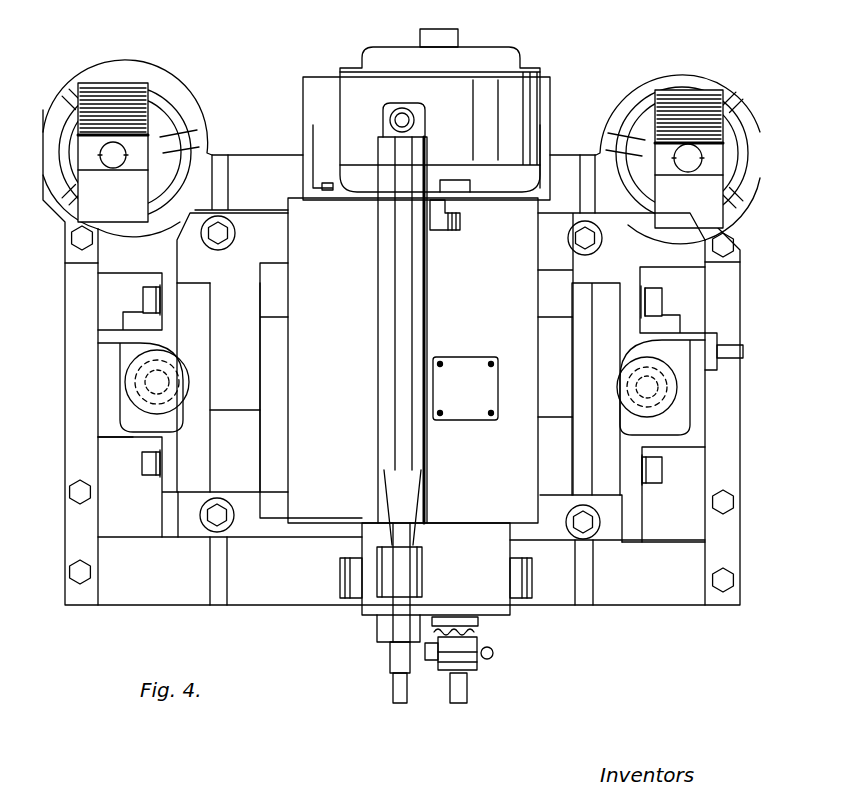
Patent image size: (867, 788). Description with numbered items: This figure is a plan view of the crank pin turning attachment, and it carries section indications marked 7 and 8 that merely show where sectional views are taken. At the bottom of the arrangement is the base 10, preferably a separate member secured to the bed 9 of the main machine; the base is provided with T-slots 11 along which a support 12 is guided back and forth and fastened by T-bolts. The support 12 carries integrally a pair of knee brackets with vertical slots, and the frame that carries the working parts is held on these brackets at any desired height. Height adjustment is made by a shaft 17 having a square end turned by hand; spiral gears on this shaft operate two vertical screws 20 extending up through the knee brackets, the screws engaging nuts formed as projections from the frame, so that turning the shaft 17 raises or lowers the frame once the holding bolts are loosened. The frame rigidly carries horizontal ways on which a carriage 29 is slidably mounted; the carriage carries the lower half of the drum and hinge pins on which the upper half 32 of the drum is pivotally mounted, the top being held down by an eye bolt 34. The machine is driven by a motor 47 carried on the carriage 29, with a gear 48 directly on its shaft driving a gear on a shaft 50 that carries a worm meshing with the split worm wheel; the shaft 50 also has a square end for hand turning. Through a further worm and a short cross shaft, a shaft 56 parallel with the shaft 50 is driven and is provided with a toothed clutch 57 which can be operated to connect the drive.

The section line 7- 7 is at (403, 103).
The section line 8- 8 is at (330, 581).
The bed 9 is at (463, 180).
The base 10 is at (282, 600).
The T-slots 11 is at (218, 573).
The support 12 is at (662, 545).
The shaft 17 is at (730, 345).
The vertical screws 20 is at (140, 410).
The carriage 29 is at (413, 360).
The upper half of the drum 32 is at (415, 440).
The eye bolt 34 is at (408, 112).
The motor 47 is at (485, 80).
The gear 48 is at (462, 224).
The shaft 50 is at (395, 661).
The shaft 56 is at (468, 686).
The toothed clutch 57 is at (480, 632).